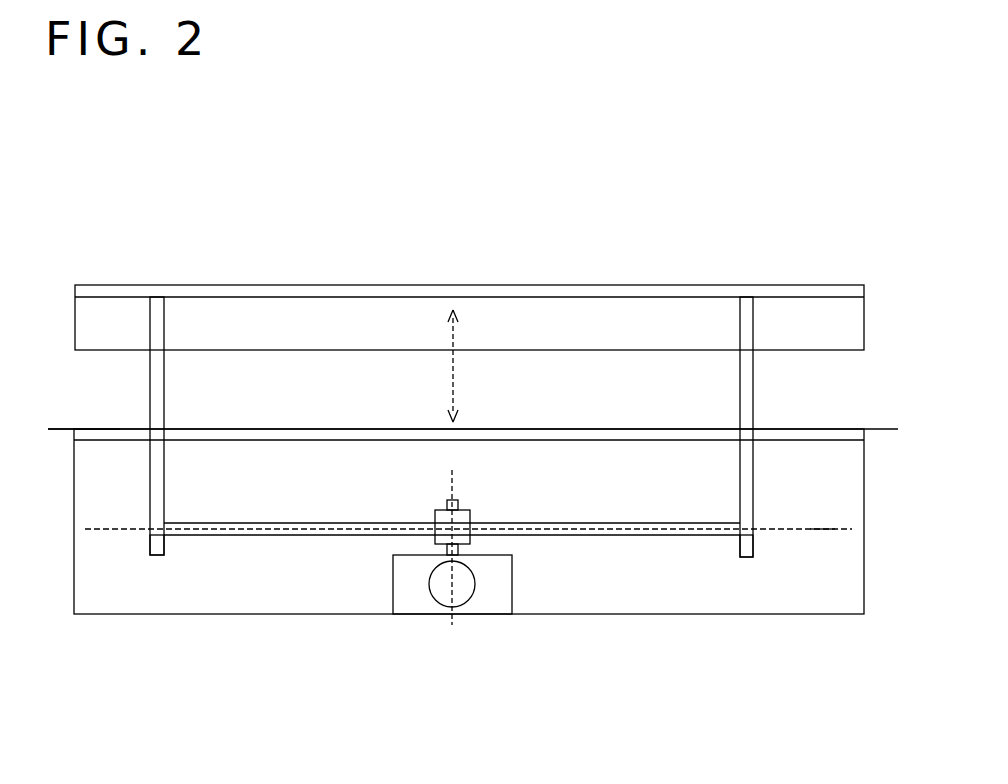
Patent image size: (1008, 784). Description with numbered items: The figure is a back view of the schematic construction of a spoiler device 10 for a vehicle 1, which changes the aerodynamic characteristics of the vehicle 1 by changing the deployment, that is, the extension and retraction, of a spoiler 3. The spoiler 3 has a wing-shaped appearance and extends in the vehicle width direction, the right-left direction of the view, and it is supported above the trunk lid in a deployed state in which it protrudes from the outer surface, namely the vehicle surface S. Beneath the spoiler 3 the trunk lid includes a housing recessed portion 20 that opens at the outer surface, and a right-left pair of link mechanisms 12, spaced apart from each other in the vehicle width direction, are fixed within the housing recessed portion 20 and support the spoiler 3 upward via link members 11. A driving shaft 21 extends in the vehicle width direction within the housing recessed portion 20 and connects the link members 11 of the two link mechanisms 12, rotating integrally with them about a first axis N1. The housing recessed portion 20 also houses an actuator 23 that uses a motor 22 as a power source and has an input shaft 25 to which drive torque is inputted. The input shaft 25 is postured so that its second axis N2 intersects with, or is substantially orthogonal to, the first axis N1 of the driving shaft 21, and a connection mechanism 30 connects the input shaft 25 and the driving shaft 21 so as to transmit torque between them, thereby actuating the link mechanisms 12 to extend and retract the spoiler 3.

The spoiler device 10 is at (72, 242).
The spoiler 3 is at (700, 287).
The vehicle 1 is at (898, 430).
The vehicle surface S is at (56, 429).
The housing recessed portion 20 is at (668, 615).
The link member 11 is at (166, 470).
The link mechanism 12 is at (150, 545).
The driving shaft 21 is at (574, 522).
The first axis N1 is at (822, 528).
The second axis N2 is at (460, 482).
The connection mechanism 30 is at (435, 511).
The input shaft 25 is at (458, 501).
The actuator 23 is at (393, 570).
The motor 22 is at (478, 586).